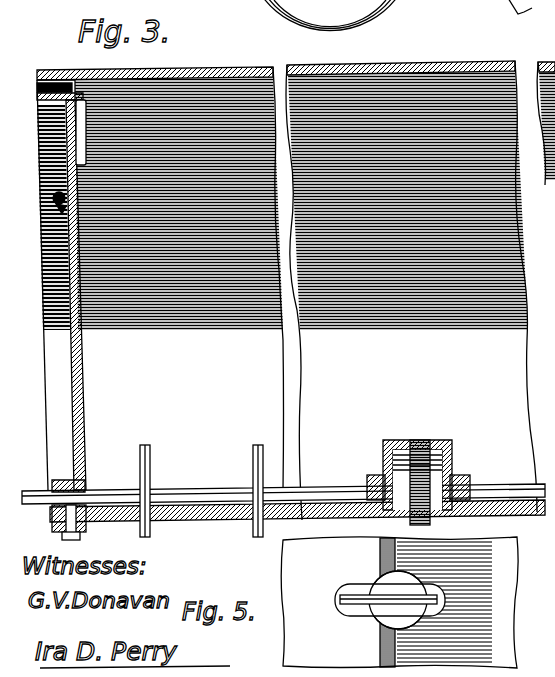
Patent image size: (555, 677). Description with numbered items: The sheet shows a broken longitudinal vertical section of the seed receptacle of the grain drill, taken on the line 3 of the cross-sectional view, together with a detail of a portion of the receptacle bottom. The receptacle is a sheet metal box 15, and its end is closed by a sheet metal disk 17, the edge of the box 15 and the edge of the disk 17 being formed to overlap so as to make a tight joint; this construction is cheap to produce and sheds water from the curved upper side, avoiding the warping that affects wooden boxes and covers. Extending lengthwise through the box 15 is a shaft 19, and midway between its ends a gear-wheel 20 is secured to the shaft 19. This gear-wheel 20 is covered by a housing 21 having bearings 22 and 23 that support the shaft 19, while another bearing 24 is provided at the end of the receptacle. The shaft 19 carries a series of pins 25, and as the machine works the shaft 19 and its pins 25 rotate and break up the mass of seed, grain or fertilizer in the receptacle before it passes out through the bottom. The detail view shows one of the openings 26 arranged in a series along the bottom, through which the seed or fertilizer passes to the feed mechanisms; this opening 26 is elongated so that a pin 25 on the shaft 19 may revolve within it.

In FIG. 3, the section line 3 is at (290, 0).
In FIG. 3, the seed box 15 is at (448, 272).
In FIG. 5, the seed box 15 is at (345, 559).
In FIG. 3, the sheet metal disk 17 is at (85, 266).
In FIG. 3, the shaft 19 is at (163, 493).
In FIG. 5, the shaft 19 is at (380, 647).
In FIG. 3, the gear-wheel 20 is at (418, 470).
In FIG. 3, the housing 21 is at (385, 442).
In FIG. 3, the bearing 22 is at (466, 476).
In FIG. 3, the bearing 23 is at (372, 476).
In FIG. 3, the bearing 24 is at (62, 480).
In FIG. 3, the pin 25 is at (145, 445).
In FIG. 5, the pin 25 is at (408, 618).
In FIG. 5, the opening 26 is at (437, 598).